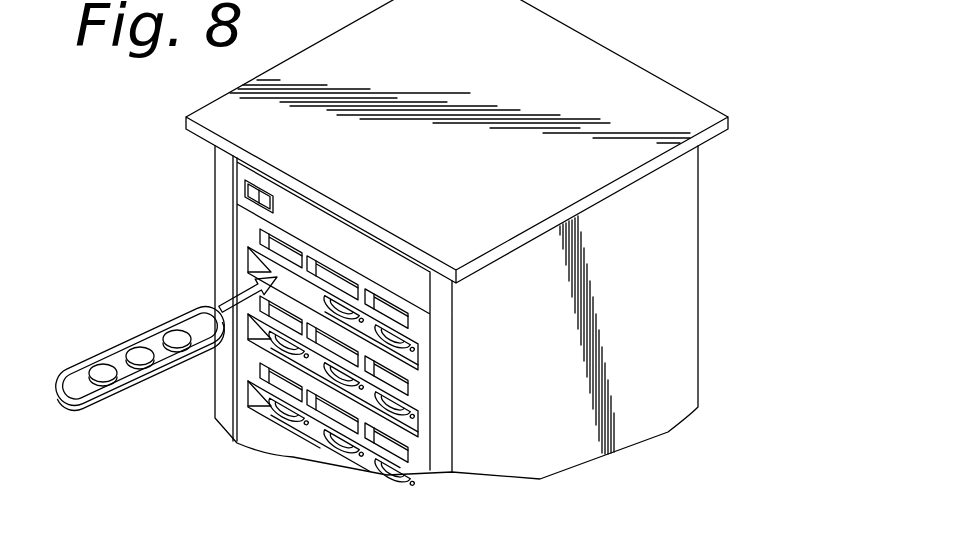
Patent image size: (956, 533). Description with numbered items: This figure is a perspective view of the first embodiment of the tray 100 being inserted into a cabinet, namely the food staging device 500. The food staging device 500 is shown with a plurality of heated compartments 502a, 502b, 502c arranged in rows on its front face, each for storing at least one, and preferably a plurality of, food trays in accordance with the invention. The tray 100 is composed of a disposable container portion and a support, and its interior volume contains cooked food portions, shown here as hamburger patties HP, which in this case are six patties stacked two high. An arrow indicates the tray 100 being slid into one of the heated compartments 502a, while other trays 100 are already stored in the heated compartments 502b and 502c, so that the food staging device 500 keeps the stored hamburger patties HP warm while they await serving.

The food staging device 500 is at (684, 263).
The heated compartment 502a is at (255, 259).
The heated compartment 502b is at (413, 421).
The heated compartment 502c is at (363, 452).
The tray 100 is at (153, 342).
The hamburger patties HP is at (175, 337).